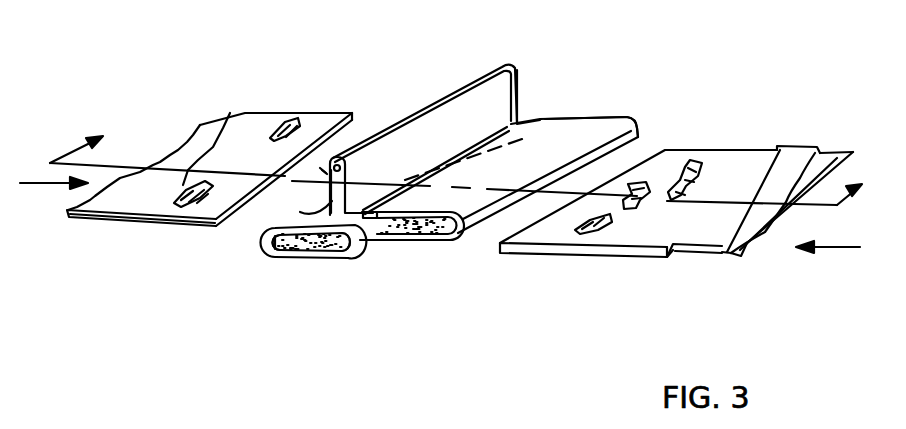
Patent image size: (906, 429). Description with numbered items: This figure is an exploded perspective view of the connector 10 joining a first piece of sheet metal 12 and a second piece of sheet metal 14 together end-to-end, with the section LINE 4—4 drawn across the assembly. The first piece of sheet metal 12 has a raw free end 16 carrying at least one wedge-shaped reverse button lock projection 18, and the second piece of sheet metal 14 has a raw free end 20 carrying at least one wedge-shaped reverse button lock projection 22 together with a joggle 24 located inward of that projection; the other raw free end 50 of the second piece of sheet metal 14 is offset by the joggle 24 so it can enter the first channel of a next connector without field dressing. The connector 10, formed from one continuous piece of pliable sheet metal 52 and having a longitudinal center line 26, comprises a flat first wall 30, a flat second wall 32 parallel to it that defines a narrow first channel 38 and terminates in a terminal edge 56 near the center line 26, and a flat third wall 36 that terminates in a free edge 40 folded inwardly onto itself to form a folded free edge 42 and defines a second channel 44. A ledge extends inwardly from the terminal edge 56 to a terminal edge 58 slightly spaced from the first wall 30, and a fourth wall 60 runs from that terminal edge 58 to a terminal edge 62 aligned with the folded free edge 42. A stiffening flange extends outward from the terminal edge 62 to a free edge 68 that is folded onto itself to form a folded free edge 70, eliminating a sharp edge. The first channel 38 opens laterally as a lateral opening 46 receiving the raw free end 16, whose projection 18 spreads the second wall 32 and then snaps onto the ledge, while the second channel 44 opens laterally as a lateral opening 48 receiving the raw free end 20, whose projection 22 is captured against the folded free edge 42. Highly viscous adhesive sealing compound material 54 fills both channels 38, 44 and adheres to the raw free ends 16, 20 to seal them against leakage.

The LINE 4— 4 is at (452, 182).
The connector 10 is at (395, 67).
The first piece of sheet metal 12 is at (204, 129).
The second piece of sheet metal 14 is at (806, 147).
The raw free end 16 is at (200, 224).
The wedge-shaped reverse button lock projection 18 is at (230, 178).
The raw free end 20 is at (542, 255).
The wedge-shaped reverse button lock projection 22 is at (676, 197).
The joggle 24 is at (675, 255).
The longitudinal center line 26 is at (600, 87).
The first wall 30 is at (397, 247).
The second wall 32 is at (600, 127).
The third wall 36 is at (303, 260).
The first channel 38 is at (430, 248).
The free edge 40 is at (333, 259).
The folded free edge 42 is at (336, 293).
The second channel 44 is at (258, 262).
The lateral opening 46 is at (487, 108).
The lateral opening 48 is at (359, 258).
The other raw free end 50 is at (747, 250).
The one continuous piece of pliable sheet metal 52 is at (637, 130).
The adhesive sealing compound material 54 is at (352, 280).
The terminal edge 56 is at (523, 118).
The terminal edge 58 is at (420, 213).
The fourth wall 60 is at (349, 212).
The terminal edge 62 is at (330, 205).
The free edge 68 is at (327, 174).
The folded free edge 70 is at (298, 159).